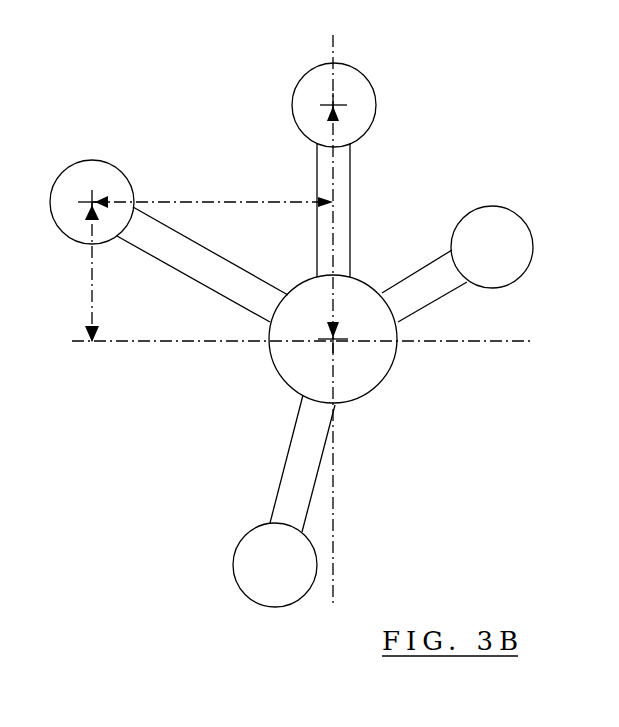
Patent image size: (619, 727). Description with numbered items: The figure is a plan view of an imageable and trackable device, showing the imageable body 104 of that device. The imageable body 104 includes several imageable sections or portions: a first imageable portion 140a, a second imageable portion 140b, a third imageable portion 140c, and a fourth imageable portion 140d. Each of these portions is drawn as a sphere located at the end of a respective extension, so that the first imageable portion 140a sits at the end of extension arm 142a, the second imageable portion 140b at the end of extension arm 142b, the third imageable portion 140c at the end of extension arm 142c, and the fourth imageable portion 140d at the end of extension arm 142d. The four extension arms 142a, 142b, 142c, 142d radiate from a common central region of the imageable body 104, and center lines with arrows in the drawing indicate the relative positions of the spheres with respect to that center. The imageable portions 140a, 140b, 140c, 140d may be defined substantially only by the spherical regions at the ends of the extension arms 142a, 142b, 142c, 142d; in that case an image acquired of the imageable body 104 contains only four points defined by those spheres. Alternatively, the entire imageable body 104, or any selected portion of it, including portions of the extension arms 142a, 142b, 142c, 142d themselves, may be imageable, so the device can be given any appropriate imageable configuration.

The imageable body 104 is at (387, 247).
The first imageable portion 140a is at (305, 570).
The second imageable portion 140b is at (115, 182).
The third imageable portion 140c is at (292, 108).
The fourth imageable portion 140d is at (520, 257).
The extension arm 142a is at (285, 452).
The extension arm 142b is at (243, 267).
The extension arm 142c is at (311, 190).
The extension arm 142d is at (443, 297).